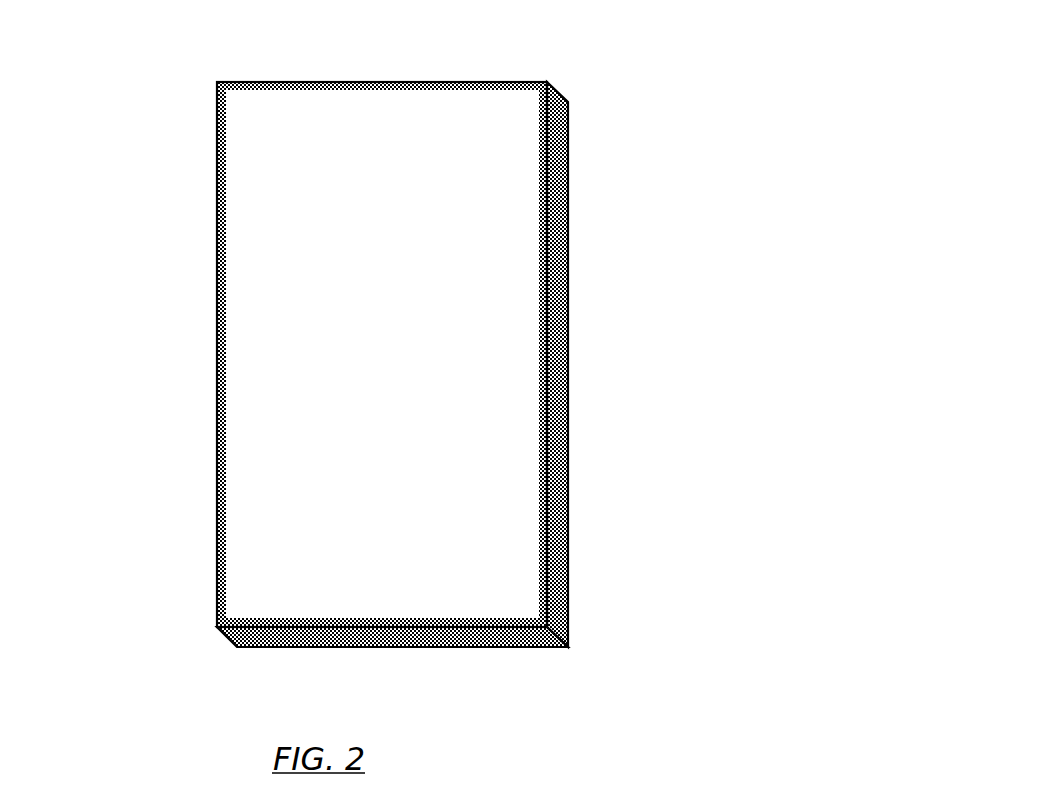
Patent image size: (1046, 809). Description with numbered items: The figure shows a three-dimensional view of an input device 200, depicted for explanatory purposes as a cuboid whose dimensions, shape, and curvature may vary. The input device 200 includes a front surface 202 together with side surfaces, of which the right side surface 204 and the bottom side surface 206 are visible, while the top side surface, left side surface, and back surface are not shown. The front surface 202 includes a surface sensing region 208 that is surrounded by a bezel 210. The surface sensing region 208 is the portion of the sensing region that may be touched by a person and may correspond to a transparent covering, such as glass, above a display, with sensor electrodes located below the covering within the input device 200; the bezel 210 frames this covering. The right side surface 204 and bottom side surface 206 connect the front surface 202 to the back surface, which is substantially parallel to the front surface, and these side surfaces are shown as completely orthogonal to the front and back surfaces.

The input device 200 is at (461, 390).
The front surface 202 is at (373, 336).
The right side surface 204 is at (557, 423).
The bottom side surface 206 is at (405, 641).
The surface sensing region 208 is at (402, 350).
The bezel 210 is at (219, 415).